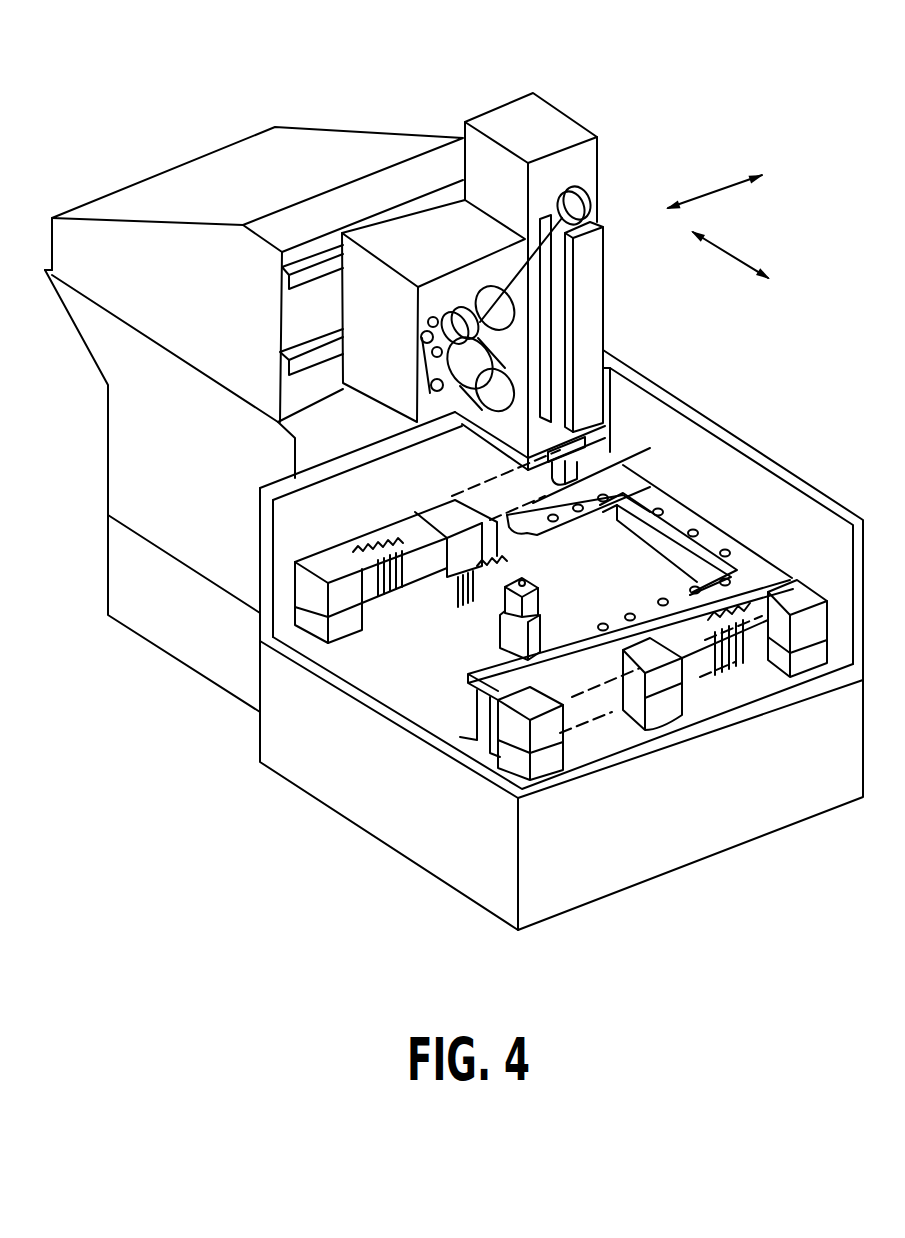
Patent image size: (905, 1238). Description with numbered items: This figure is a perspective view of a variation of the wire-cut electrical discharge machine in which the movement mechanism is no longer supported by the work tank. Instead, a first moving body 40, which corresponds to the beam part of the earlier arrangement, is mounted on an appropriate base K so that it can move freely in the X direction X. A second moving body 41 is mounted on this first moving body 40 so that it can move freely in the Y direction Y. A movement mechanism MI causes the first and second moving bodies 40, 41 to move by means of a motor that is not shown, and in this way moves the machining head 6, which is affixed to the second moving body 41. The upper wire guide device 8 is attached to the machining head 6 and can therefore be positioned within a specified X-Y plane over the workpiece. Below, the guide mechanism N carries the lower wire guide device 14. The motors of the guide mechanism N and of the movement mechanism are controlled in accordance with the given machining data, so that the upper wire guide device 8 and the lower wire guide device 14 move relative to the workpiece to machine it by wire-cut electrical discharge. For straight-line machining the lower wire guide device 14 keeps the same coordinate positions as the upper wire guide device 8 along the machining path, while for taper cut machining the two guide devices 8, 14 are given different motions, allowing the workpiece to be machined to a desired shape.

The movement mechanism MI is at (457, 88).
The base K is at (125, 431).
The moving body 40 is at (258, 162).
The moving body 41 is at (421, 212).
The machining head 6 is at (602, 192).
The upper wire guide device 8 is at (598, 456).
The lower wire guide device 14 is at (485, 613).
The guide mechanism N is at (597, 737).
The X direction X is at (730, 260).
The Y direction Y is at (714, 179).